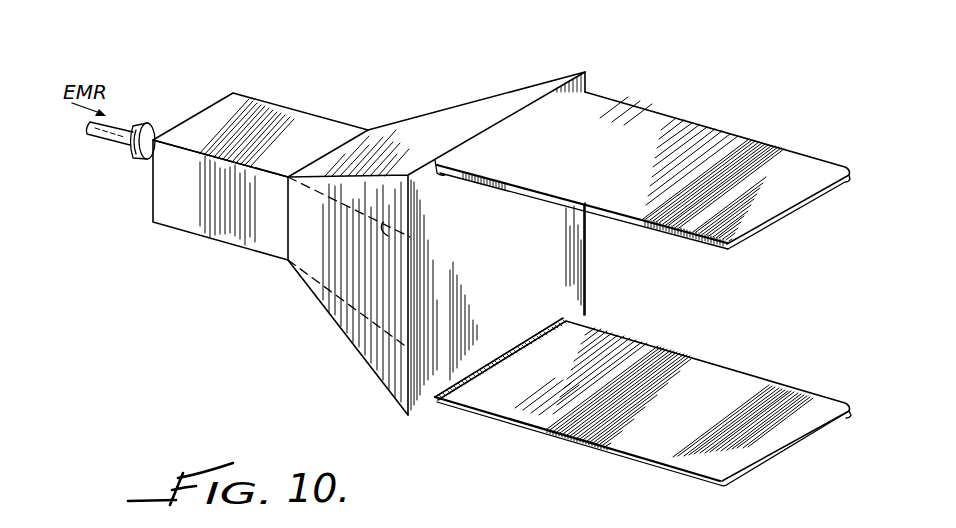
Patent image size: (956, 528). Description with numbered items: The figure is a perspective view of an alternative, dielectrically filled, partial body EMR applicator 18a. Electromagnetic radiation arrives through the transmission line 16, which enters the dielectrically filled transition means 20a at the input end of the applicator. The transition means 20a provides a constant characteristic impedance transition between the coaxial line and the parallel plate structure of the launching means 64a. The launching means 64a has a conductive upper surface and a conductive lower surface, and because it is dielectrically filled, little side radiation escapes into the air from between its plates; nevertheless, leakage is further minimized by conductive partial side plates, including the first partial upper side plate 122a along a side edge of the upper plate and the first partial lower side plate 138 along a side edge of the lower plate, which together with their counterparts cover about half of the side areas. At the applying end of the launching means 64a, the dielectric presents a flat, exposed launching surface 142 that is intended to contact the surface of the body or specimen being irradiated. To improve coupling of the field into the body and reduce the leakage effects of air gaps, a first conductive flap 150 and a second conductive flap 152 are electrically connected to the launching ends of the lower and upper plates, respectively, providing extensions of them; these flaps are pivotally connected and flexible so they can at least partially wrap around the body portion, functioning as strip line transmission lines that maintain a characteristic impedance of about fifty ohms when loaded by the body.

The transmission line 16 is at (122, 130).
The dielectrically filled transition means 20a is at (200, 253).
The dielectrically filled partial body EMR applicator 18a is at (457, 221).
The first partial upper side plate 122a is at (403, 238).
The first partial lower side plate 138 is at (360, 314).
The launching means 64a is at (347, 362).
The launching surface 142 is at (585, 285).
The second conductive flap 152 is at (735, 140).
The first conductive flap 150 is at (630, 445).